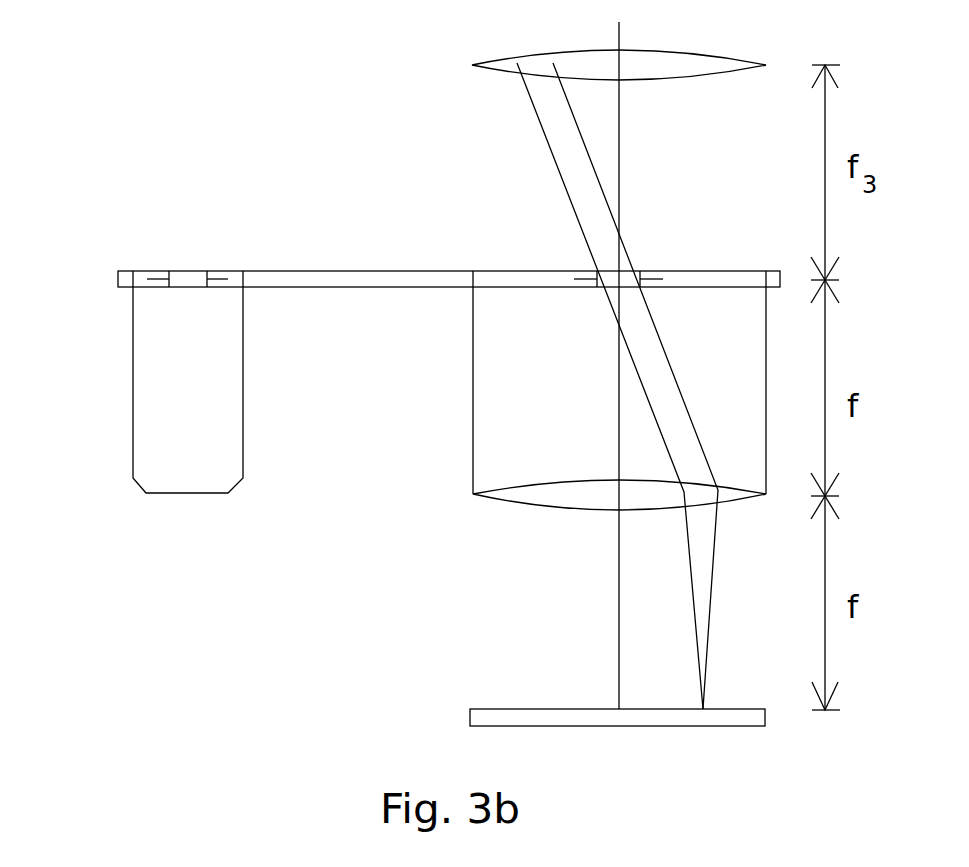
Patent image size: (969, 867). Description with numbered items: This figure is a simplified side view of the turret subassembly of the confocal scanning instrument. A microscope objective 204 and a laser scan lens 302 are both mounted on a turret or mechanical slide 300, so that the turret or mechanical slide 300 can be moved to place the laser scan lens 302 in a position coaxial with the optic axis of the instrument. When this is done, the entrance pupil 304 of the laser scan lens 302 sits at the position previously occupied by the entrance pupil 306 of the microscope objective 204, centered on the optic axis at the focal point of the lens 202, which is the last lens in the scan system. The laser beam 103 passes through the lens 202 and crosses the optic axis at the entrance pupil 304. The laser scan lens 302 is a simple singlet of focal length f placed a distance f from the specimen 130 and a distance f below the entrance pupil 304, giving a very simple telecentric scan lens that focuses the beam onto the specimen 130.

The lens 202 is at (526, 55).
The laser beam 103 is at (664, 167).
The turret or mechanical slide 300 is at (118, 272).
The entrance pupil of microscope objective 306 is at (208, 276).
The entrance pupil of laser scan lens 304 is at (590, 279).
The microscope objective 204 is at (243, 410).
The laser scan lens 302 is at (518, 502).
The specimen 130 is at (485, 727).